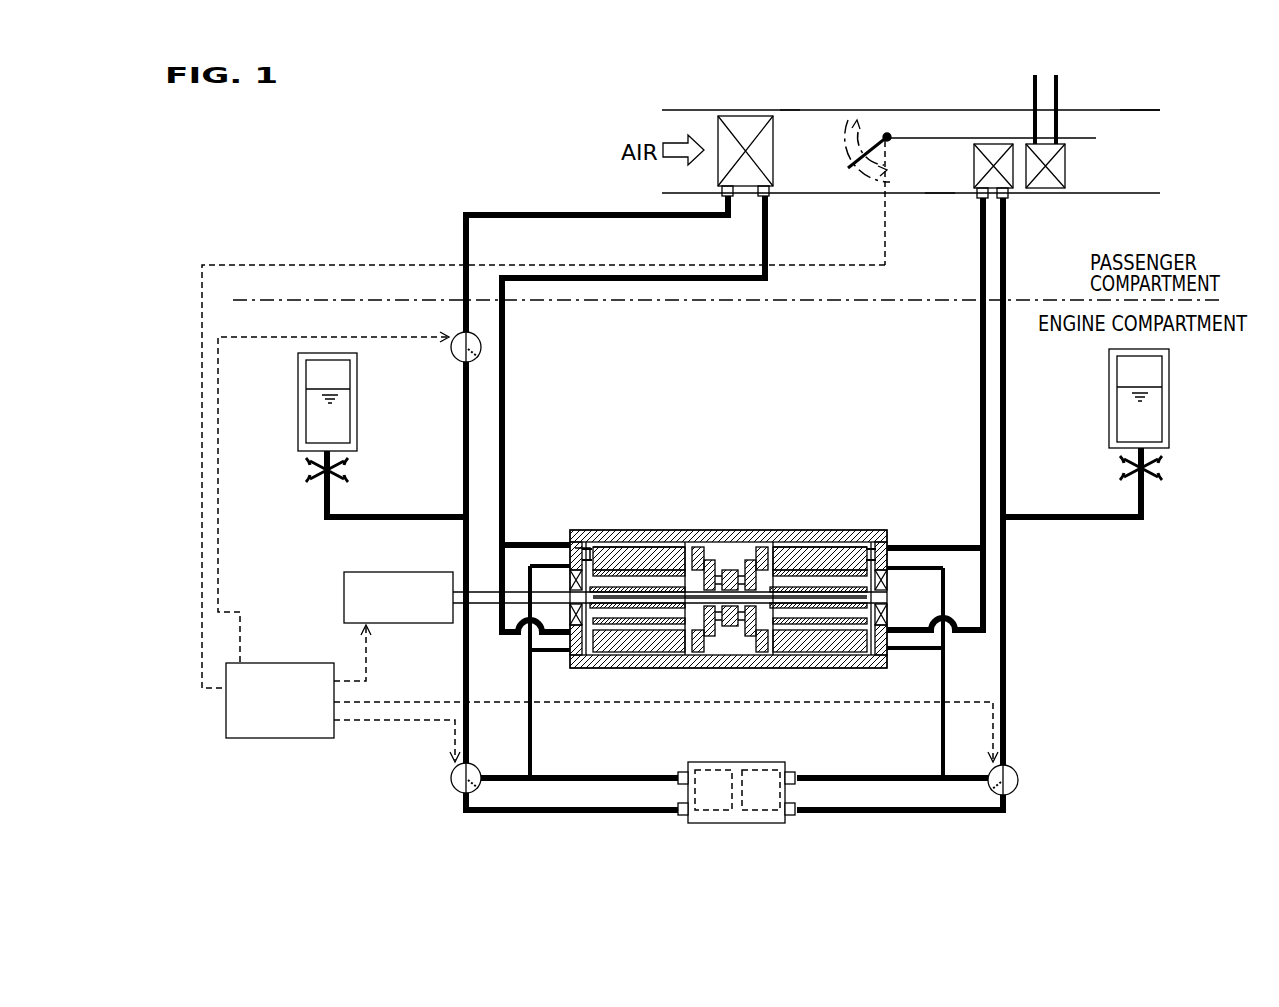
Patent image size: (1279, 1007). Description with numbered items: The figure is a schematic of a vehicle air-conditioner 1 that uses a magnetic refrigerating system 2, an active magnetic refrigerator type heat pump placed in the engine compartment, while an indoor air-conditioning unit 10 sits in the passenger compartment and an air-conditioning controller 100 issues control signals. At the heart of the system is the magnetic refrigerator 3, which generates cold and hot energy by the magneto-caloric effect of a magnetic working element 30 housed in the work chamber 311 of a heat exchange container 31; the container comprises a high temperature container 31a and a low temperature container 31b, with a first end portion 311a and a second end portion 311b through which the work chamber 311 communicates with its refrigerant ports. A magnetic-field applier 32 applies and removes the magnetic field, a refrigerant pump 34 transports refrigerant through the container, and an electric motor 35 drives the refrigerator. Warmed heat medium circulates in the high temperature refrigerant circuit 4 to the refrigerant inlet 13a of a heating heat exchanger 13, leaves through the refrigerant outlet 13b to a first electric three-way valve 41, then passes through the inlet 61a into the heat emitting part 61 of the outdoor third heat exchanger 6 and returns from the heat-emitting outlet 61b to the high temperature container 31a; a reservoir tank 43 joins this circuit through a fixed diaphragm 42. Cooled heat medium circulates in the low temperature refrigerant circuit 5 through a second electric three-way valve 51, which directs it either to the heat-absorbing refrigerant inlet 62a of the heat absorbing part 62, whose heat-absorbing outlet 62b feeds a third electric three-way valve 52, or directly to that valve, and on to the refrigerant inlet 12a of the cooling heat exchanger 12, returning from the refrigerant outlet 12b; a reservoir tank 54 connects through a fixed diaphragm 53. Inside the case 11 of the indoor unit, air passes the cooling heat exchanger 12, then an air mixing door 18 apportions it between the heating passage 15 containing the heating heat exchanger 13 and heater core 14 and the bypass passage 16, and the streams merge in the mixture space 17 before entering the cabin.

The air-conditioner 1 is at (413, 178).
The magnetic refrigerating system 2 is at (417, 620).
The magnetic refrigerator 3 is at (713, 566).
The high temperature refrigerant circuit 4 is at (983, 405).
The low temperature refrigerant circuit 5 is at (505, 410).
The third heat exchanger 6 is at (731, 764).
The indoor air-conditioning unit 10 is at (678, 106).
The case 11 is at (787, 108).
The cooling heat exchanger 12 is at (748, 130).
The refrigerant inlet of cooling heat exchanger 12a is at (735, 200).
The refrigerant outlet of cooling heat exchanger 12b is at (770, 200).
The heating heat exchanger 13 is at (993, 153).
The refrigerant inlet of heating heat exchanger 13a is at (978, 200).
The refrigerant outlet of heating heat exchanger 13b is at (1010, 200).
The heater core 14 is at (1058, 165).
The heating passage 15 is at (940, 157).
The bypass passage 16 is at (897, 128).
The mixture space 17 is at (1133, 155).
The air mixing door 18 is at (838, 122).
The magnetic working element 30 is at (638, 552).
The heat exchange container 31 is at (730, 554).
The high temperature container 31a is at (825, 522).
The low temperature container 31b is at (617, 522).
The work chamber 311 is at (690, 545).
The first end portion 311a is at (866, 550).
The second end portion 311b is at (588, 548).
The magnetic-field applier 32 is at (622, 627).
The refrigerant pump 34 is at (732, 525).
The electric motor 35 is at (412, 630).
The first electric three-way valve 41 is at (1018, 780).
The fixed diaphragm 42 is at (1160, 470).
The reservoir tank 43 is at (1170, 395).
The second electric three-way valve 51 is at (451, 778).
The third electric three-way valve 52 is at (451, 352).
The fixed diaphragm 53 is at (312, 470).
The reservoir tank 54 is at (298, 395).
The heat emitting part 61 is at (760, 768).
The inlet of heat emitting part 61a is at (797, 803).
The heat-emitting outlet 61b is at (797, 770).
The heat absorbing part 62 is at (713, 768).
The heat-absorbing refrigerant inlet 62a is at (682, 770).
The heat-absorbing outlet 62b is at (678, 803).
The air-conditioning controller 100 is at (292, 740).